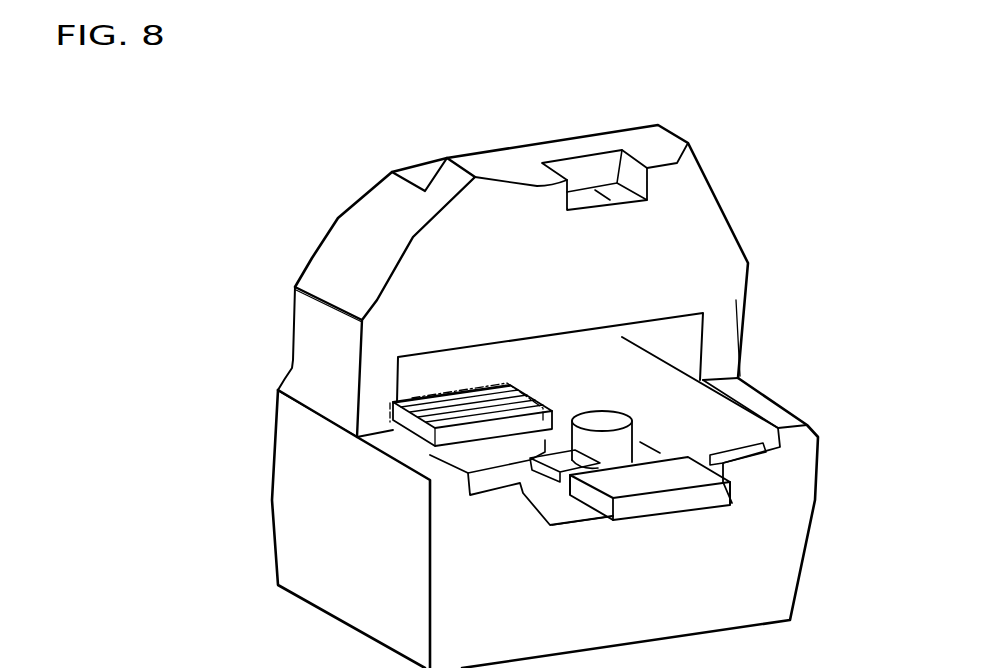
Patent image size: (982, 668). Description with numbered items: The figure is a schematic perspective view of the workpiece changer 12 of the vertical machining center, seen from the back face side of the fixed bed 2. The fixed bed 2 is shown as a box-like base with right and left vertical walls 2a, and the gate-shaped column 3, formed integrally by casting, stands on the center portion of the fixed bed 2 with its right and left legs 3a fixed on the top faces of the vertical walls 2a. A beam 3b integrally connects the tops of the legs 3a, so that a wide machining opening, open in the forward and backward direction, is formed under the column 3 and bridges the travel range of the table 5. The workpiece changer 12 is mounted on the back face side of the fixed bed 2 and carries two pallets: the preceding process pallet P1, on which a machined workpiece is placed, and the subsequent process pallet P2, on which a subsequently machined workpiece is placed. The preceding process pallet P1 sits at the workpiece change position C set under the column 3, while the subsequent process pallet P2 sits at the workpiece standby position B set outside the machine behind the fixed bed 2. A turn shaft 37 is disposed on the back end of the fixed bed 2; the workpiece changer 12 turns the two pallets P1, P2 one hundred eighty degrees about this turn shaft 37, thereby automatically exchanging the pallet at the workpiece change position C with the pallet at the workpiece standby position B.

The fixed bed 2 is at (820, 487).
The vertical walls 2a is at (780, 400).
The column 3 is at (727, 217).
The legs 3a is at (290, 358).
The beam 3b is at (493, 147).
The table 5 is at (560, 423).
The workpiece changer 12 is at (632, 382).
The turn shaft 37 is at (632, 413).
The workpiece change position C is at (488, 455).
The workpiece standby position B is at (660, 530).
The preceding process pallet P1 is at (533, 403).
The subsequent process pallet P2 is at (702, 520).